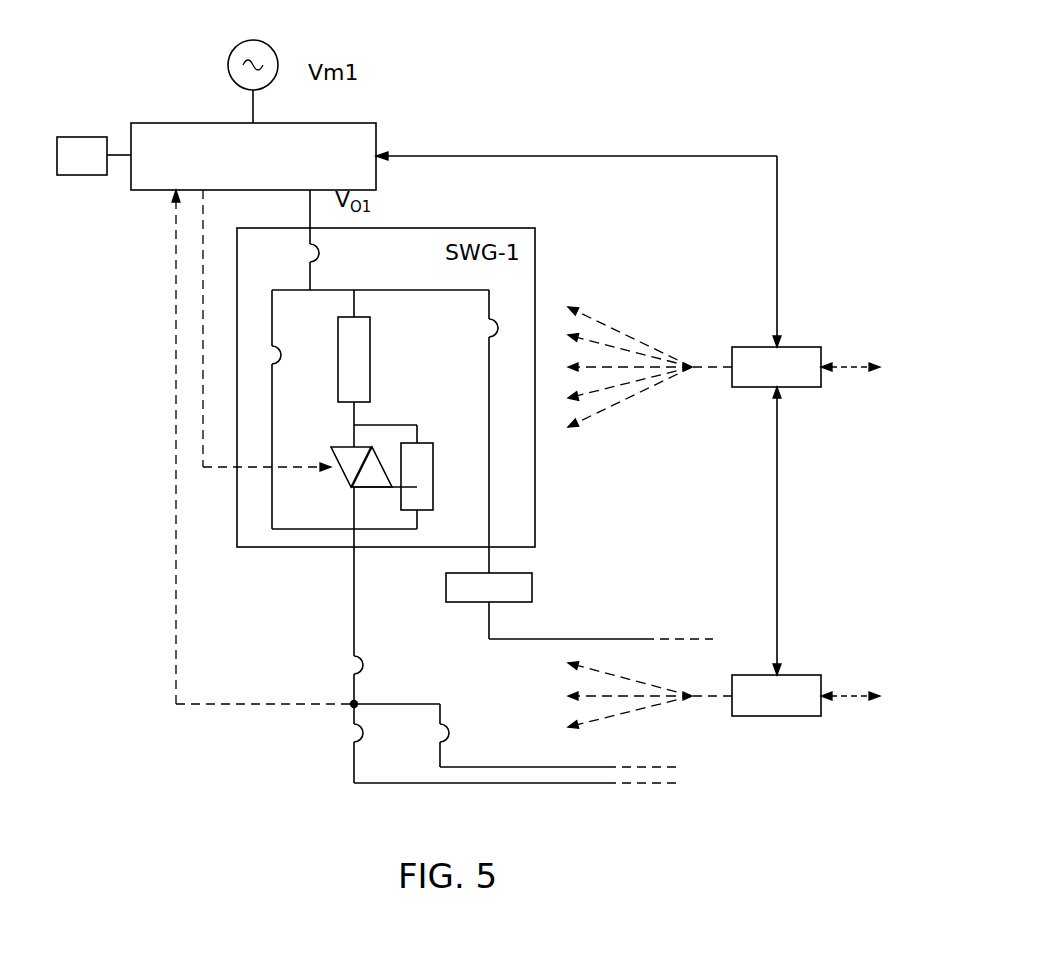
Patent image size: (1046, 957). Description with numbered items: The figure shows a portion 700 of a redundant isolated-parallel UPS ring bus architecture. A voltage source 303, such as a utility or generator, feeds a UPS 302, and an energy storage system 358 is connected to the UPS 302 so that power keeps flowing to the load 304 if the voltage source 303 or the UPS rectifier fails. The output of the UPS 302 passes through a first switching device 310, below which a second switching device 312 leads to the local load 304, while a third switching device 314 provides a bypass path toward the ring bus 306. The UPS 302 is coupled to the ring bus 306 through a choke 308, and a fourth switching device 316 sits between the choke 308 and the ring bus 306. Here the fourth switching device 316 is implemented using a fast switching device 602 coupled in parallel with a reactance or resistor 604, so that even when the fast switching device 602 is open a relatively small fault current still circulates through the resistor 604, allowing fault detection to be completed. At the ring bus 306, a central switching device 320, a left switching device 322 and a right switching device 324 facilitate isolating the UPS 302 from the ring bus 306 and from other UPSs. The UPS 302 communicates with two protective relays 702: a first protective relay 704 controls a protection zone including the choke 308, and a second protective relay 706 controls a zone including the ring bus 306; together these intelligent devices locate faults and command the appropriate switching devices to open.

The voltage source 303 is at (275, 47).
The UPS 302 is at (380, 142).
The energy storage system 358 is at (87, 180).
The portion of a ring bus architecture 700 is at (633, 90).
The first switching device 310 is at (303, 256).
The choke 308 is at (371, 328).
The third switching device 314 is at (283, 367).
The second switching device 312 is at (498, 340).
The fast switching device 602 is at (382, 453).
The reactance or resistor 604 is at (436, 452).
The fourth switching device 316 is at (340, 470).
The load 304 is at (534, 588).
The central switching device 320 is at (367, 667).
The left switching device 322 is at (350, 741).
The right switching device 324 is at (452, 734).
The ring bus 306 is at (403, 786).
The first protective relay 704 is at (798, 350).
The second protective relay 706 is at (798, 678).
The protective relay 702 is at (823, 353).